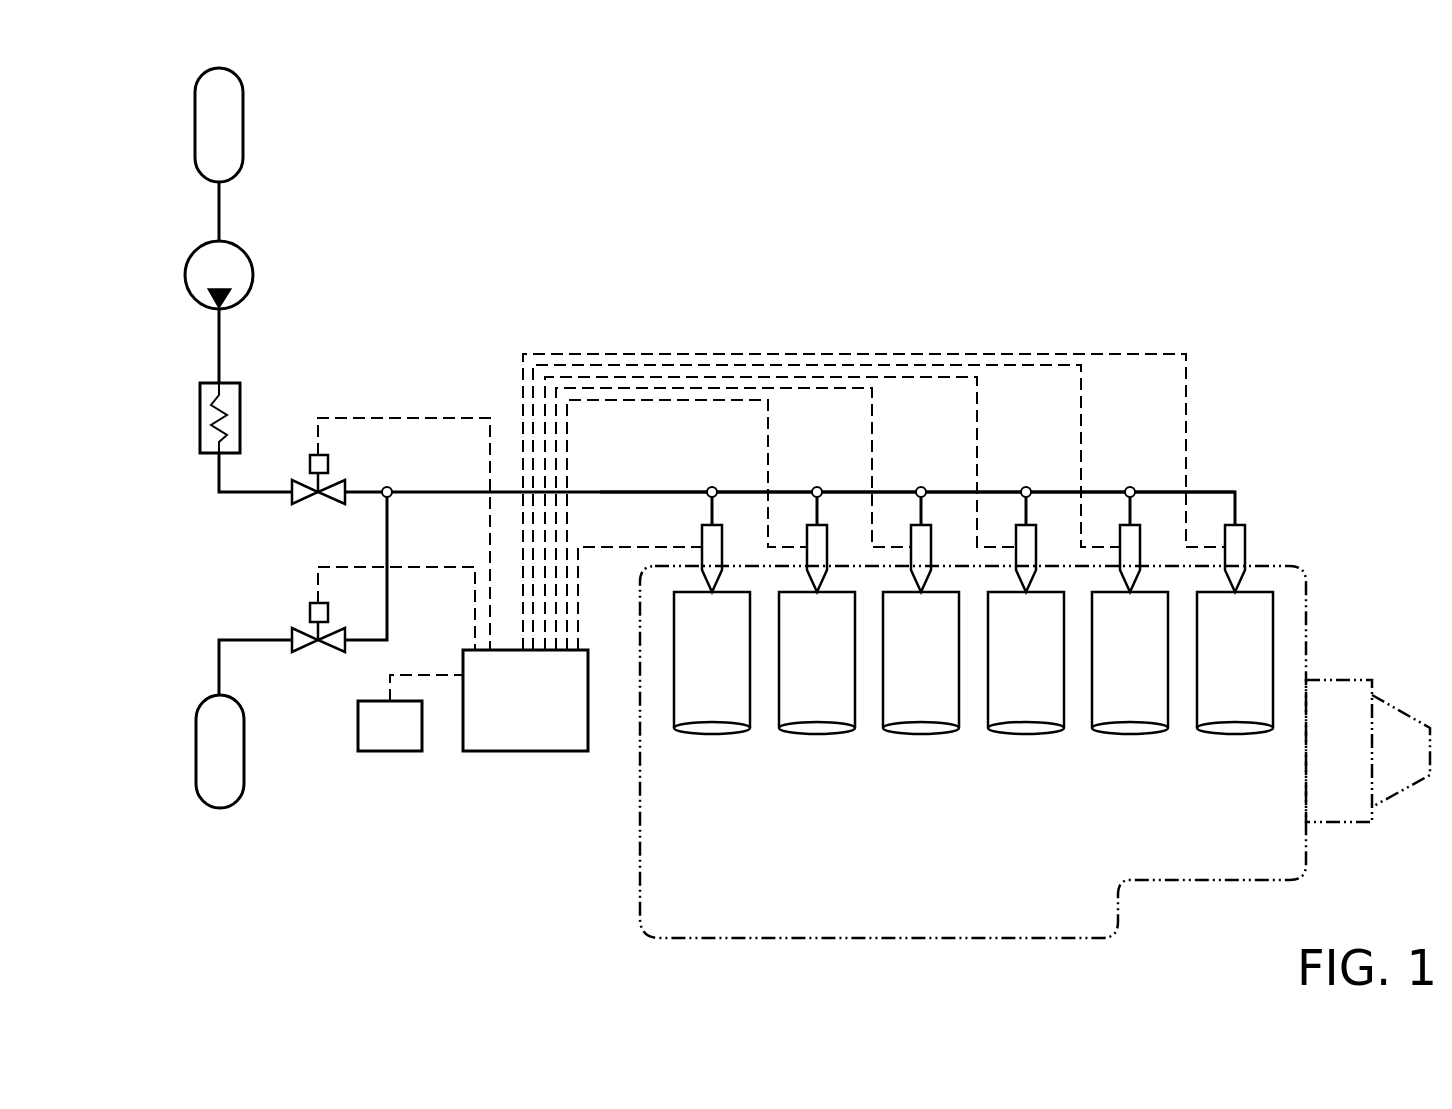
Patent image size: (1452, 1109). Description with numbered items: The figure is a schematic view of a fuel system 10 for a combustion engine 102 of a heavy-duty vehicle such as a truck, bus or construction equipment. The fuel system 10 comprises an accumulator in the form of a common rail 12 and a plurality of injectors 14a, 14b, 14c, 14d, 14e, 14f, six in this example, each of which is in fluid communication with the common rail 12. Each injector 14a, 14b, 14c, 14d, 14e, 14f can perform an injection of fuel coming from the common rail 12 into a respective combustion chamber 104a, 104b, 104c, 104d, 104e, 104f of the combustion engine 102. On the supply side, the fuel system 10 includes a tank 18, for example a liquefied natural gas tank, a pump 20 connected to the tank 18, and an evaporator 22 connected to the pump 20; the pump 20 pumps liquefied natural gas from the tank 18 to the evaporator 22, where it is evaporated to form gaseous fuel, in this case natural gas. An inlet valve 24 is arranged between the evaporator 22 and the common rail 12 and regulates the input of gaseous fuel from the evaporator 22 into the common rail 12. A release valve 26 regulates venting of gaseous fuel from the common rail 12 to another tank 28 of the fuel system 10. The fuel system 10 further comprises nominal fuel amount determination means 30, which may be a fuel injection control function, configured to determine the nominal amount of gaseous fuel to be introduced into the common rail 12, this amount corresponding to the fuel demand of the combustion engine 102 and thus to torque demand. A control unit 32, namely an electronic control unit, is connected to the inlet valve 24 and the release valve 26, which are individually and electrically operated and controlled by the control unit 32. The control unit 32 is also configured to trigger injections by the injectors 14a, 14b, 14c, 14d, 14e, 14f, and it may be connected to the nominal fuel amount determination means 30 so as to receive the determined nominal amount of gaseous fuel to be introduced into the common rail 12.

The fuel system 10 is at (1292, 262).
The common rail 12 is at (1228, 468).
The injector 14a is at (708, 537).
The injector 14b is at (813, 537).
The injector 14c is at (917, 537).
The injector 14d is at (1022, 537).
The injector 14e is at (1126, 537).
The injector 14f is at (1248, 537).
The tank 18 is at (243, 118).
The pump 20 is at (253, 275).
The evaporator 22 is at (240, 400).
The inlet valve 24 is at (328, 504).
The release valve 26 is at (328, 652).
The tank 28 is at (196, 750).
The nominal fuel amount determination means 30 is at (385, 752).
The control unit 32 is at (522, 752).
The combustion engine 102 is at (627, 861).
The combustion chamber 104a is at (710, 673).
The combustion chamber 104b is at (815, 673).
The combustion chamber 104c is at (919, 673).
The combustion chamber 104d is at (1024, 673).
The combustion chamber 104e is at (1128, 673).
The combustion chamber 104f is at (1233, 673).